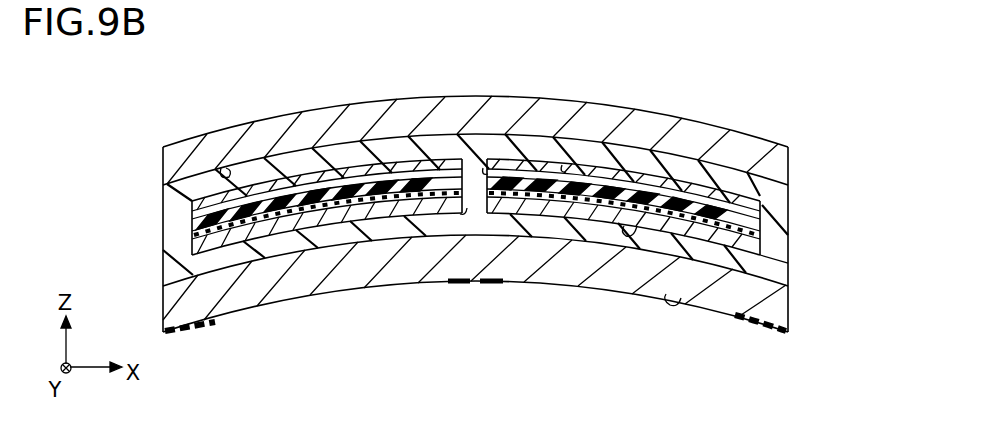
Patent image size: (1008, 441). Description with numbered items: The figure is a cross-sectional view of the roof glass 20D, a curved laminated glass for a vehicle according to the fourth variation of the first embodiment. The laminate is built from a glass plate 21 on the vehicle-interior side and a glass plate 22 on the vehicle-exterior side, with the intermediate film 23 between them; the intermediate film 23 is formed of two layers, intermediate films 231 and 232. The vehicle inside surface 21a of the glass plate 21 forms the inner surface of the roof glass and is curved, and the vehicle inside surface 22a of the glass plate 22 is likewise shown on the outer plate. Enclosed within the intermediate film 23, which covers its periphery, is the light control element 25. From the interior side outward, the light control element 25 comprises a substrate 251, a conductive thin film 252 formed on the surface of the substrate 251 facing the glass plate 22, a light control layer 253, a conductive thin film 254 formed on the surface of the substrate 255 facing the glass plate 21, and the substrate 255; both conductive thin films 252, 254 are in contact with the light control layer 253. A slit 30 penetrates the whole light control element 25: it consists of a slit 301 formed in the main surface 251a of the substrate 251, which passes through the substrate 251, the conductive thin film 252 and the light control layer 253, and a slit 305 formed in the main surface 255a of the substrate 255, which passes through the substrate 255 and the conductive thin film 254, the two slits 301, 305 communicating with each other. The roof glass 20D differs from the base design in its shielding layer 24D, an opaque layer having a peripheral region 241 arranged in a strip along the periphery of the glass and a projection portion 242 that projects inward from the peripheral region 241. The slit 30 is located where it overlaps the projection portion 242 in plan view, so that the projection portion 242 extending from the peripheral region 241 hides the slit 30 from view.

The roof glass 20D is at (72, 89).
The glass plate 21 is at (780, 302).
The vehicle inside surface 21a is at (681, 298).
The glass plate 22 is at (780, 170).
The vehicle inside surface 22a is at (221, 168).
The intermediate film 23 is at (860, 198).
The intermediate film 231 is at (778, 263).
The intermediate film 232 is at (778, 218).
The shielding layer 24D is at (650, 360).
The peripheral region 241 is at (733, 314).
The projection portion 242 is at (494, 283).
The light control element 25 is at (498, 360).
The substrate 251 is at (247, 233).
The main surface 251a is at (637, 226).
The conductive thin film 252 is at (302, 215).
The light control layer 253 is at (358, 195).
The conductive thin film 254 is at (415, 180).
The substrate 255 is at (450, 170).
The main surface 255a is at (562, 165).
The slit 30 is at (420, 62).
The slit 301 is at (467, 208).
The slit 305 is at (483, 168).